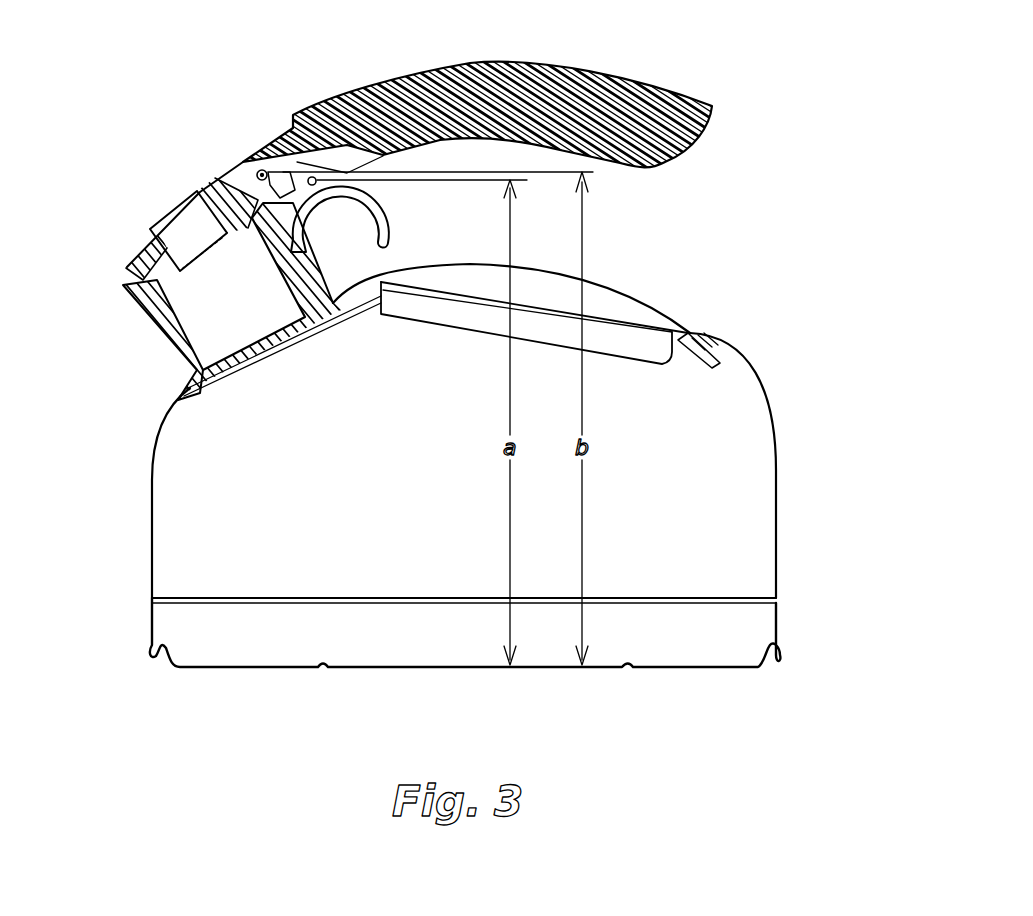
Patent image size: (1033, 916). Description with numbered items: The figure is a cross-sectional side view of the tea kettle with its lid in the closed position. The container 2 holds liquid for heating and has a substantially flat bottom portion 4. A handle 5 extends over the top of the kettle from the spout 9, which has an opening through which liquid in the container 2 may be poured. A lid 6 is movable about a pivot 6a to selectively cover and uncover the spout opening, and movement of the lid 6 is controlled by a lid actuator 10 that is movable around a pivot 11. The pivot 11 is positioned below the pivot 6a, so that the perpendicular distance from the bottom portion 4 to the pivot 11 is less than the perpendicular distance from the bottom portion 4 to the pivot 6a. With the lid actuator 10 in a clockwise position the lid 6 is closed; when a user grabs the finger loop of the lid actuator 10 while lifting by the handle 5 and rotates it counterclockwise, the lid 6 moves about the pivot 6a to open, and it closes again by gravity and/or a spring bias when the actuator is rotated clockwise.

The container 2 is at (150, 483).
The bottom portion 4 is at (262, 668).
The handle 5 is at (548, 68).
The lid 6 is at (135, 263).
The pivot 6a is at (264, 169).
The spout 9 is at (160, 312).
The lid actuator 10 is at (392, 233).
The pivot 11 is at (315, 184).